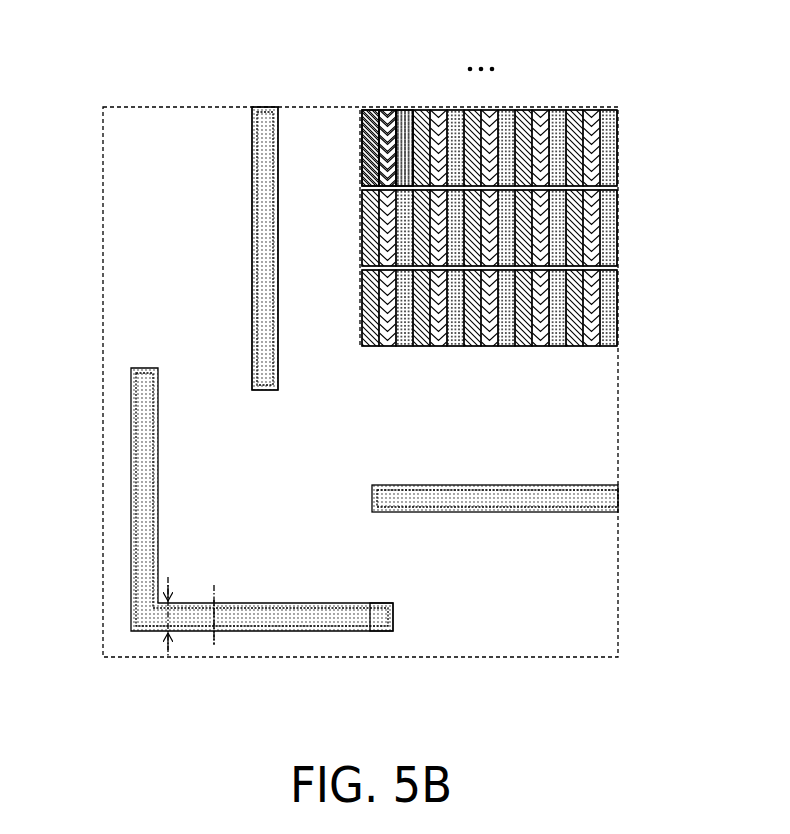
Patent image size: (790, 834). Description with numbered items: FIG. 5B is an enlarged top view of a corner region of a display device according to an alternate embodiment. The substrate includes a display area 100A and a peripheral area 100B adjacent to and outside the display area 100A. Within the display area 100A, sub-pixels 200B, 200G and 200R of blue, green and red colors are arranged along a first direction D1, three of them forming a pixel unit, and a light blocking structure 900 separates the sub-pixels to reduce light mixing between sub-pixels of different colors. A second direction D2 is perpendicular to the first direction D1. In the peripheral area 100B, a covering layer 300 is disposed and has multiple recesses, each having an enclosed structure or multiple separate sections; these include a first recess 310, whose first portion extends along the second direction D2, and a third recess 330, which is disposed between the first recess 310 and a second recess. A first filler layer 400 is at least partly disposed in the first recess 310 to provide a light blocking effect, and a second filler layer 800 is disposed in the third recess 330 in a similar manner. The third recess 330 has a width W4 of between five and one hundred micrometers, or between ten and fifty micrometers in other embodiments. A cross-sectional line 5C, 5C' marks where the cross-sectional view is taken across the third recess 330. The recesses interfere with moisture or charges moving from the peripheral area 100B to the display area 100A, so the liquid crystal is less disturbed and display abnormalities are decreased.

The display area 100A is at (587, 348).
The peripheral area 100B is at (318, 105).
The sub-pixel 200B is at (371, 110).
The sub-pixel 200G is at (387, 110).
The sub-pixel 200R is at (404, 110).
The light blocking structure 900 is at (614, 189).
The covering layer 300 is at (296, 117).
The first recess 310 is at (256, 162).
The first filler layer 400 is at (252, 195).
The third recess 330 is at (338, 632).
The second filler layer 800 is at (393, 617).
The width of the third recess W4 is at (170, 617).
The cross-sectional line 5C is at (248, 628).
The cross-sectional line 5C' is at (251, 611).
The first direction D1 is at (68, 297).
The second direction D2 is at (598, 698).